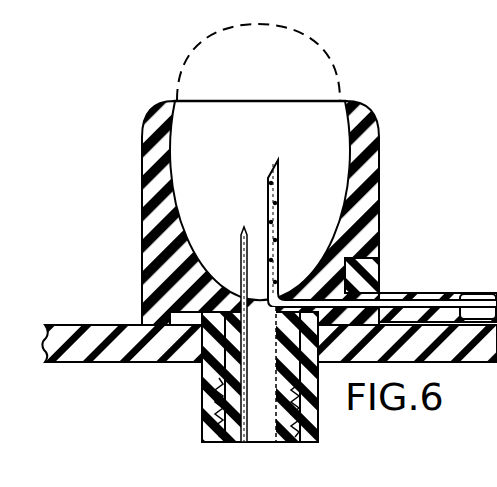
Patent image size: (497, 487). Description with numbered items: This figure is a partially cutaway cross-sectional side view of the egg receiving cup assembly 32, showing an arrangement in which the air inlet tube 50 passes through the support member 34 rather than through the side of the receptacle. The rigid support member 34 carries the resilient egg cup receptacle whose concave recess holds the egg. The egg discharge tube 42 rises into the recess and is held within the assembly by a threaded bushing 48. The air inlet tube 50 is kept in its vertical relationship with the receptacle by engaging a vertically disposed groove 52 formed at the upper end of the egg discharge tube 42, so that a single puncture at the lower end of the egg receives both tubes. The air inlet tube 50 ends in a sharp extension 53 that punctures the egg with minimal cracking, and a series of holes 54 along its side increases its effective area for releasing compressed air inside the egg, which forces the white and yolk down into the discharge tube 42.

The egg receiving cup assembly 32 is at (385, 176).
The support member 34 is at (153, 282).
The egg discharge tube 42 is at (240, 249).
The threaded bushing 48 is at (290, 445).
The air inlet tube 50 is at (394, 292).
The vertically disposed groove 52 is at (264, 302).
The sharp extension 53 is at (274, 168).
The holes 54 is at (276, 188).